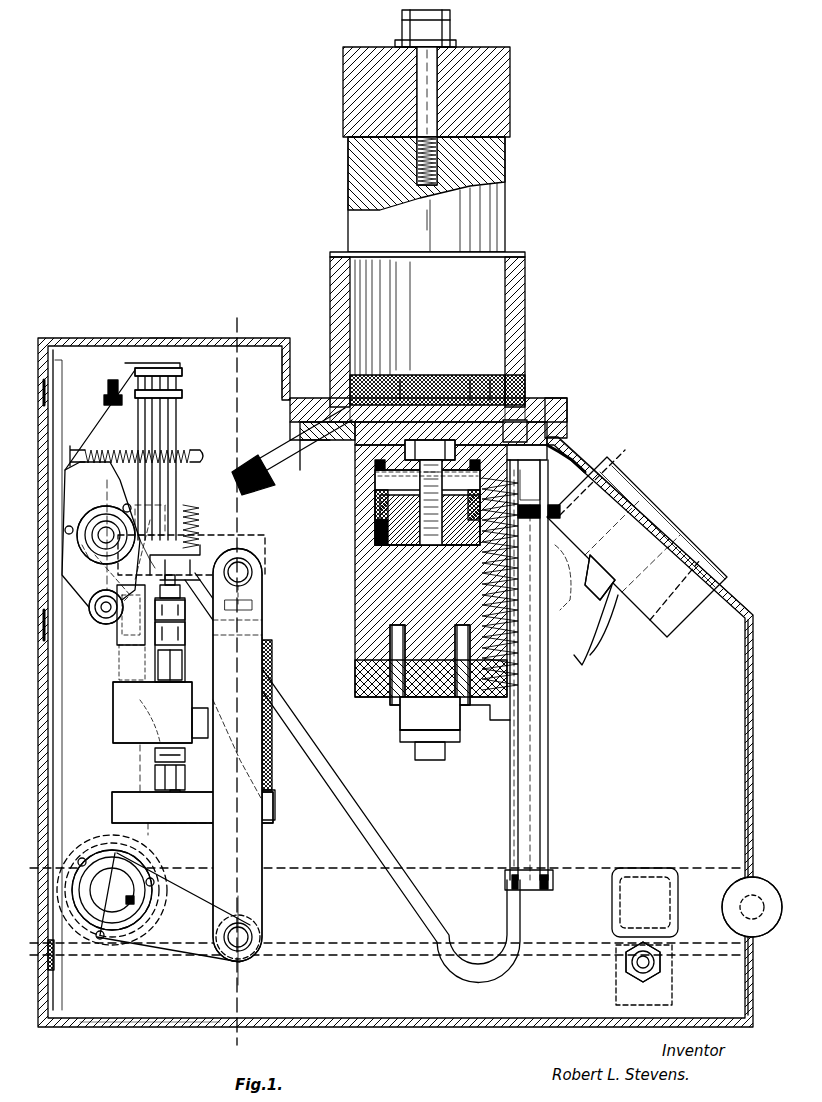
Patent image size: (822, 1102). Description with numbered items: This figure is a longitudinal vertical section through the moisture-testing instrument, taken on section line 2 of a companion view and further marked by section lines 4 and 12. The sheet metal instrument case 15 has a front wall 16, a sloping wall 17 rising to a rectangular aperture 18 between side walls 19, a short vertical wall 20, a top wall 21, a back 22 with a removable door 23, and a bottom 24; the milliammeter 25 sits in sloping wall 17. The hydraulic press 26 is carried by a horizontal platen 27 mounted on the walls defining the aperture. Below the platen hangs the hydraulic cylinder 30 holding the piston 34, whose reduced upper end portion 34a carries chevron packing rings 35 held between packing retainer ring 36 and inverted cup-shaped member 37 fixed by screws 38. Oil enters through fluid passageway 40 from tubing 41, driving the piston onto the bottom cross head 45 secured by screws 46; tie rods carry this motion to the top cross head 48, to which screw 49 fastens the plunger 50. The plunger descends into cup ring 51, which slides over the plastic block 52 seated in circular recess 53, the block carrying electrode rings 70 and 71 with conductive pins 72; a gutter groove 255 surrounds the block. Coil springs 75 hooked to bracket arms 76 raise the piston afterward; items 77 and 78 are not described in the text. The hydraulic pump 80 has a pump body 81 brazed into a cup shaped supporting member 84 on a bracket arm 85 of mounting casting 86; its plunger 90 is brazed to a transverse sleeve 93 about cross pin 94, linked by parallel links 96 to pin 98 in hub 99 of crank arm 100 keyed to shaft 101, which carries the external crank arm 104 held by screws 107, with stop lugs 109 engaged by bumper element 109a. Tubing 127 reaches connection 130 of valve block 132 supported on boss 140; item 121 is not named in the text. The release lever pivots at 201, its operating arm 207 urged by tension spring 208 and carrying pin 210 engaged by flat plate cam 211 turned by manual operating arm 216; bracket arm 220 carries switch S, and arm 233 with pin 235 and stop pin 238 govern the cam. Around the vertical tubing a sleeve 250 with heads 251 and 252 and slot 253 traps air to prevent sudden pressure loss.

The section line 2- 2 is at (396, 17).
The section line 4- 4 is at (221, 322).
The section line 12- 12 is at (113, 484).
The instrument case 15 is at (80, 338).
The front wall 16 is at (753, 725).
The sloping wall 17 is at (735, 600).
The rectangular aperture 18 is at (530, 420).
The side walls 19 is at (575, 450).
The short vertical wall 20 is at (287, 360).
The top wall 21 is at (160, 338).
The back 22 is at (40, 368).
The removable door 23 is at (46, 568).
The bottom 24 is at (130, 1027).
The milliammeter 25 is at (642, 490).
The hydraulic press 26 is at (566, 298).
The platen 27 is at (568, 408).
The hydraulic cylinder 30 is at (355, 603).
The piston 34 is at (385, 580).
The reduced upper end portion 34a is at (375, 498).
The chevron-shaped packing rings 35 is at (375, 526).
The packing retainer ring 36 is at (375, 540).
The inverted cup-shaped member 37 is at (375, 480).
The screws 38 is at (375, 464).
The fluid passageway 40 is at (528, 466).
The tubing 41 is at (358, 830).
The bottom cross head 45 is at (355, 690).
The screws 46 is at (455, 660).
The top cross head 48 is at (517, 101).
The screw 49 is at (437, 70).
The plunger 50 is at (505, 162).
The cup ring 51 is at (525, 322).
The plastic block 52 is at (430, 380).
The circular recess 53 is at (518, 375).
The electrode ring 70 is at (490, 378).
The electrode ring 71 is at (470, 378).
The conductive pins 72 is at (400, 378).
The coil springs 75 is at (538, 618).
The bracket arms 76 is at (478, 735).
The port 77 is at (515, 431).
The inlet tube 78 is at (268, 480).
The hydraulic pump 80 is at (280, 679).
The pump body 81 is at (272, 750).
The cup shaped supporting member 84 is at (276, 810).
The bracket arm 85 is at (125, 806).
The mounting casting 86 is at (60, 745).
The plunger 90 is at (254, 603).
The transverse sleeve 93 is at (250, 593).
The cross pin 94 is at (252, 572).
The parallel links 96 is at (258, 724).
The pin 98 is at (252, 935).
The hub 99 is at (258, 914).
The crank arm 100 is at (183, 948).
The rotatable shaft 101 is at (112, 890).
The manually operable crank arm 104 is at (562, 945).
The screws 107 is at (78, 862).
The stop lugs 109 is at (580, 592).
The bumper element 109a is at (612, 906).
The hinge 121 is at (62, 975).
The tubing 127 is at (162, 788).
The connection 130 is at (160, 758).
The valve block 132 is at (128, 702).
The boss 140 is at (198, 724).
The pivot 201 is at (100, 607).
The operating arm 207 is at (70, 498).
The tension spring 208 is at (94, 450).
The pin 210 is at (65, 531).
The flat plate cam 211 is at (95, 528).
The manual operating arm 216 is at (262, 535).
The bracket arm 220 is at (126, 386).
The arm 233 is at (160, 550).
The pin 235 is at (125, 504).
The stop pin 238 is at (98, 592).
The sleeve 250 is at (550, 818).
The head 251 is at (560, 510).
The head 252 is at (508, 875).
The slot 253 is at (514, 873).
The gutter groove 255 is at (320, 410).
The switch S is at (200, 520).